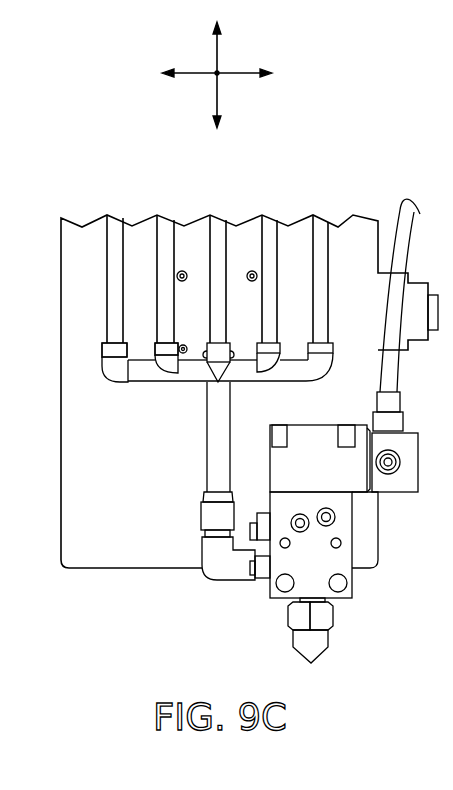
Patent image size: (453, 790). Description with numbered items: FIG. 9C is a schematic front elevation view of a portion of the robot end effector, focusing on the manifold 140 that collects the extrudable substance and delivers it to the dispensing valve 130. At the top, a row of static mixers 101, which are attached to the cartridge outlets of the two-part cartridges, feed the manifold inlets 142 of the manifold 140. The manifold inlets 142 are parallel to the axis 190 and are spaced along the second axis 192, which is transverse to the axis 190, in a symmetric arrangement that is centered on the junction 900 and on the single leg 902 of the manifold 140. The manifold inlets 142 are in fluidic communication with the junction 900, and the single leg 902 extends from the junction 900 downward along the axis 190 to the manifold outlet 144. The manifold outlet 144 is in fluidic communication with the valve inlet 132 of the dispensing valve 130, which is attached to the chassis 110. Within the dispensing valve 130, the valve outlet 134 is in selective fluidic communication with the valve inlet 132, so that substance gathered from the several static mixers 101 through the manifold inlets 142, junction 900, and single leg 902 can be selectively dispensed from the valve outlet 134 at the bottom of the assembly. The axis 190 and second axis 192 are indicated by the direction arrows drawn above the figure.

The static mixers 101 is at (272, 228).
The chassis 110 is at (380, 508).
The dispensing valve 130 is at (353, 583).
The valve inlet 132 is at (195, 546).
The valve outlet 134 is at (292, 665).
The manifold 140 is at (148, 382).
The manifold inlets 142 is at (148, 332).
The manifold outlet 144 is at (194, 528).
The axis 190 is at (238, 73).
The second axis 192 is at (217, 96).
The junction 900 is at (206, 379).
The single leg 902 is at (206, 441).